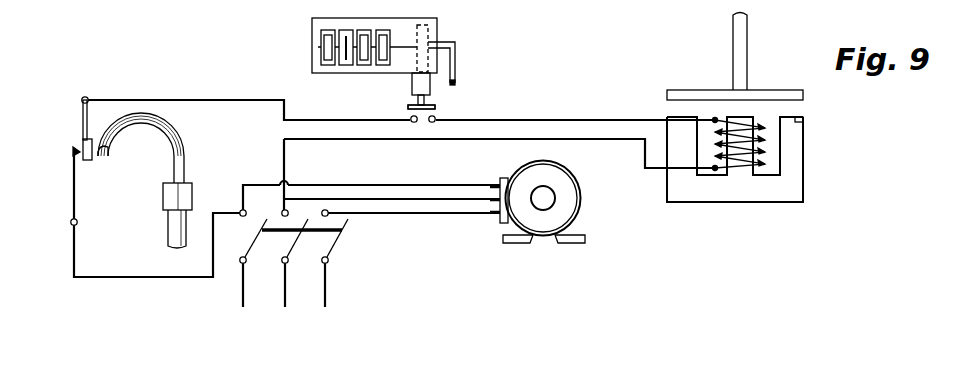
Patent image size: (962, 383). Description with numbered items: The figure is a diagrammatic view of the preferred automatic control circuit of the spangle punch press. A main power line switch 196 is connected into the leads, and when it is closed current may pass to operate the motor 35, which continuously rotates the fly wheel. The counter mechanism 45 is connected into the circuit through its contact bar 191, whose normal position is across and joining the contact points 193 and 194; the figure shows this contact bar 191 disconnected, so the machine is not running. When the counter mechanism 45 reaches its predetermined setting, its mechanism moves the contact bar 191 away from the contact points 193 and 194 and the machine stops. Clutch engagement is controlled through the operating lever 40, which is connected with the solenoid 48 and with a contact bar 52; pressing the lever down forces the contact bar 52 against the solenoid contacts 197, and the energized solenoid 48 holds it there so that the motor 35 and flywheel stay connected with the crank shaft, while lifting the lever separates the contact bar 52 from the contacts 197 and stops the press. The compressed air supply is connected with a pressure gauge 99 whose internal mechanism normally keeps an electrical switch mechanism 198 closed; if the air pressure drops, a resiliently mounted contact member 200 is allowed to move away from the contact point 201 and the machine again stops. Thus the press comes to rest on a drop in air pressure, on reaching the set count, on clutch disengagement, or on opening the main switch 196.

The motor 35 is at (572, 213).
The operating lever 40 is at (742, 37).
The counter mechanism 45 is at (402, 18).
The solenoid 48 is at (760, 145).
The contact bar 52 is at (688, 92).
The pressure gauge 99 is at (185, 148).
The contact bar 191 is at (436, 105).
The contact point 193 is at (433, 123).
The contact point 194 is at (412, 123).
The main power line switch 196 is at (352, 243).
The solenoid contacts 197 is at (806, 121).
The electrical switch mechanism 198 is at (78, 144).
The resiliently mounted contact member 200 is at (90, 139).
The contact point 201 is at (76, 155).